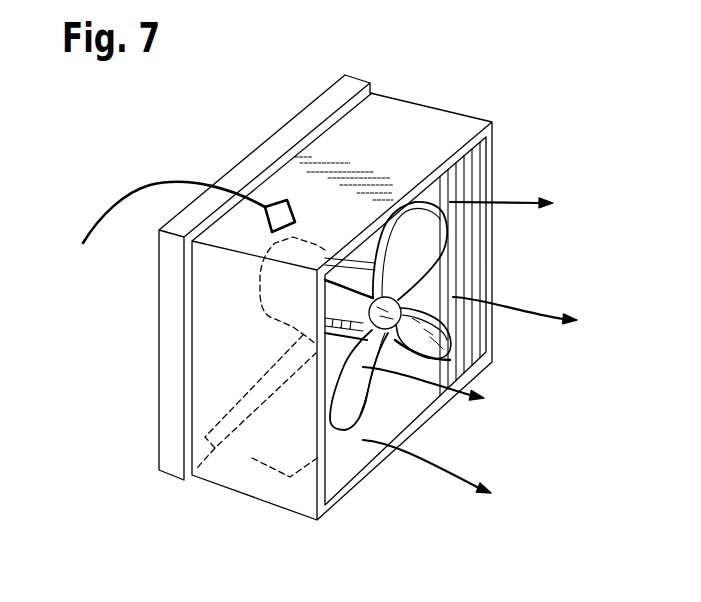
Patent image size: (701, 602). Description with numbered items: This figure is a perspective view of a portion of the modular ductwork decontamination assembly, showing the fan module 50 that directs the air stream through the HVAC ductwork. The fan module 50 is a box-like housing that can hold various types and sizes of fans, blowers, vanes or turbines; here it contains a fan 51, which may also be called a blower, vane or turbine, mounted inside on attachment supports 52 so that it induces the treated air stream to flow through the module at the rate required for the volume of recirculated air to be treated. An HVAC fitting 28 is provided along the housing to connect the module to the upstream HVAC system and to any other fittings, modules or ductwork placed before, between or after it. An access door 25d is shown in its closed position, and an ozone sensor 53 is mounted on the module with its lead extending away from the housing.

The HVAC fitting 28 is at (320, 103).
The fan module 50 is at (378, 136).
The fan 51 is at (430, 241).
The attachment support 52 is at (240, 443).
The ozone sensor 53 is at (172, 223).
The access door 25d is at (387, 383).